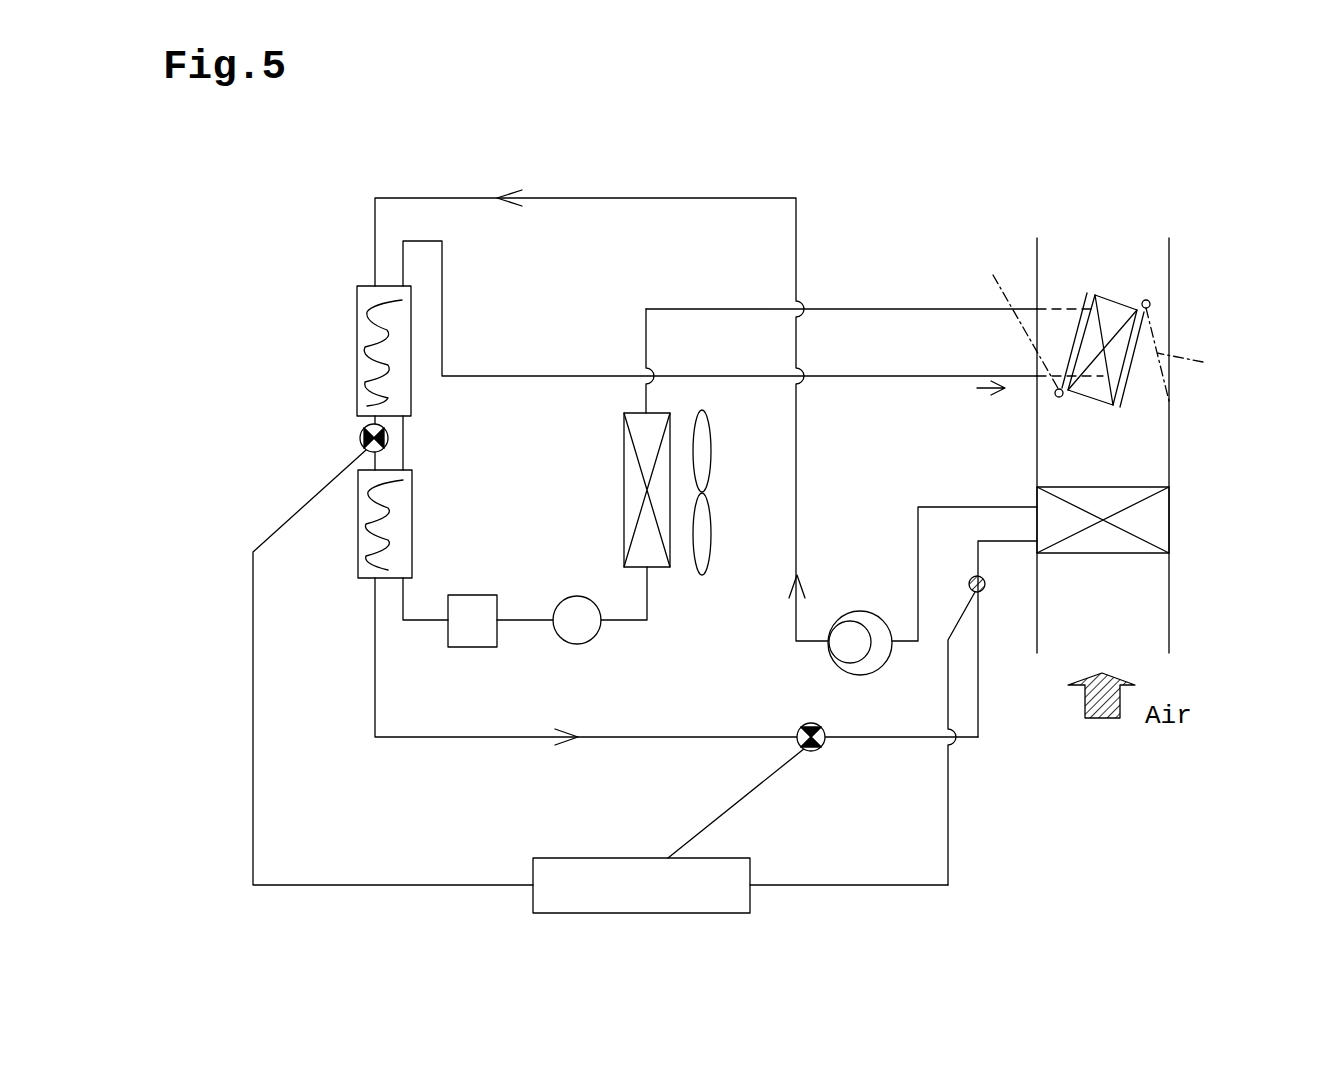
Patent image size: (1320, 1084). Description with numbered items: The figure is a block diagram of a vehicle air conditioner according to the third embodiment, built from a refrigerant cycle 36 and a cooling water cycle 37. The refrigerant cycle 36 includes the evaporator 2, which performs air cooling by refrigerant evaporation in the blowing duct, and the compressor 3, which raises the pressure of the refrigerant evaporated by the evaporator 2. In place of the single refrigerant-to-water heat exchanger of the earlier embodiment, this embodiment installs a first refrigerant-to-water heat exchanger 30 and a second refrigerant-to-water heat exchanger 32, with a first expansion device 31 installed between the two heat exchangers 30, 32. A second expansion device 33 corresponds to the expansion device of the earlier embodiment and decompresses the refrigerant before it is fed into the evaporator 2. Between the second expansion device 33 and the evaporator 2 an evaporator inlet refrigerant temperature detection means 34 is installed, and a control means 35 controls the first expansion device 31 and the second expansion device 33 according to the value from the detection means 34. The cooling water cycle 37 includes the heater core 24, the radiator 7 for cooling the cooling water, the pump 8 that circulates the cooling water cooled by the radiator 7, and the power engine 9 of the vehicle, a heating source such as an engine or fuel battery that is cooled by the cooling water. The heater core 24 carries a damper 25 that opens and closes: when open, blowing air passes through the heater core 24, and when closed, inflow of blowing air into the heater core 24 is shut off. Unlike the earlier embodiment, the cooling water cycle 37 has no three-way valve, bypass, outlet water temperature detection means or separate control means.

The evaporator 2 is at (1085, 555).
The compressor 3 is at (836, 665).
The radiator 7 is at (624, 487).
The pump 8 is at (572, 596).
The power engine 9 is at (470, 595).
The heater core 24 is at (1117, 297).
The damper 25 is at (1087, 297).
The first refrigerant-to-water heat exchanger 30 is at (357, 342).
The first expansion device 31 is at (360, 437).
The second refrigerant-to-water heat exchanger 32 is at (358, 525).
The second expansion device 33 is at (820, 750).
The evaporator inlet refrigerant temperature detection means 34 is at (985, 591).
The control means 35 is at (632, 913).
The refrigerant cycle 36 is at (980, 688).
The cooling water cycle 37 is at (872, 307).